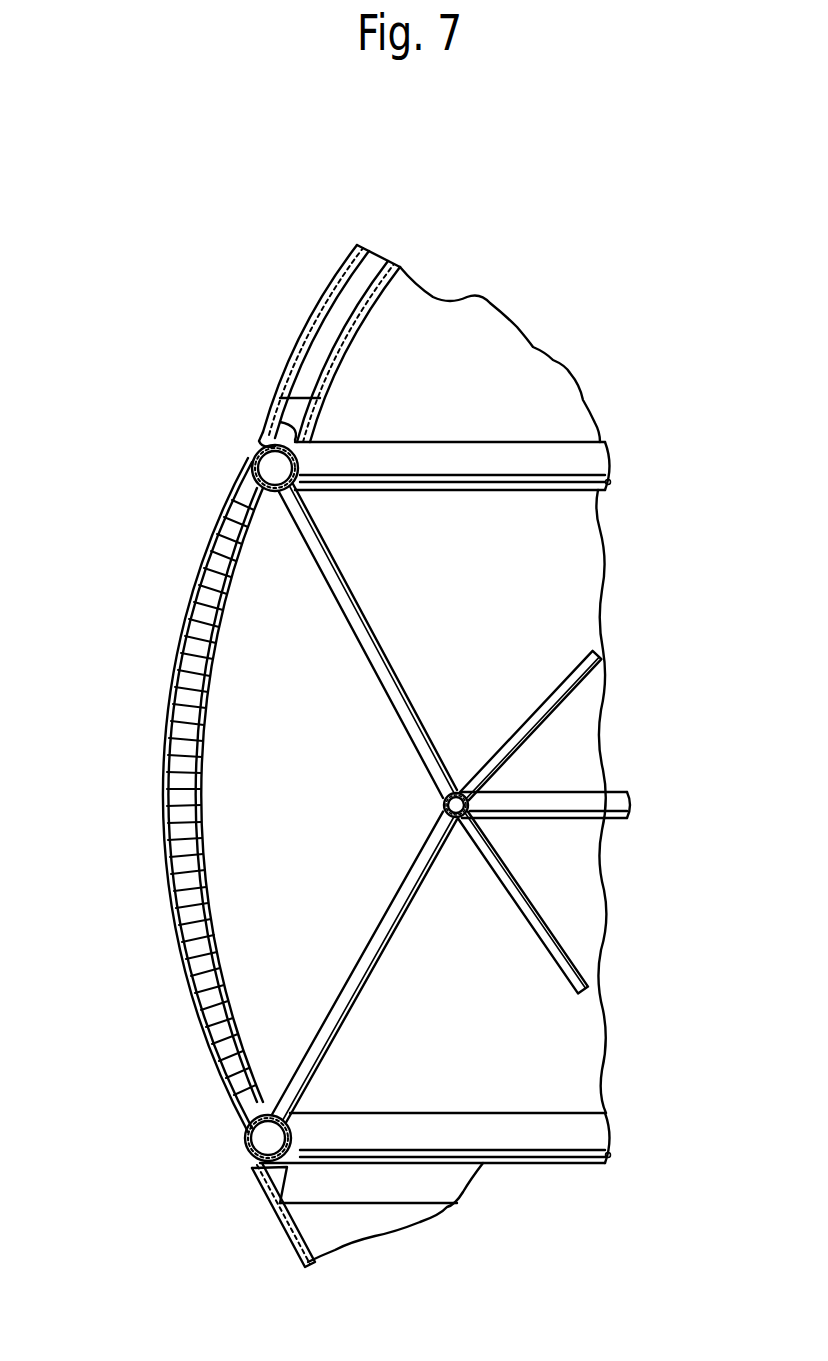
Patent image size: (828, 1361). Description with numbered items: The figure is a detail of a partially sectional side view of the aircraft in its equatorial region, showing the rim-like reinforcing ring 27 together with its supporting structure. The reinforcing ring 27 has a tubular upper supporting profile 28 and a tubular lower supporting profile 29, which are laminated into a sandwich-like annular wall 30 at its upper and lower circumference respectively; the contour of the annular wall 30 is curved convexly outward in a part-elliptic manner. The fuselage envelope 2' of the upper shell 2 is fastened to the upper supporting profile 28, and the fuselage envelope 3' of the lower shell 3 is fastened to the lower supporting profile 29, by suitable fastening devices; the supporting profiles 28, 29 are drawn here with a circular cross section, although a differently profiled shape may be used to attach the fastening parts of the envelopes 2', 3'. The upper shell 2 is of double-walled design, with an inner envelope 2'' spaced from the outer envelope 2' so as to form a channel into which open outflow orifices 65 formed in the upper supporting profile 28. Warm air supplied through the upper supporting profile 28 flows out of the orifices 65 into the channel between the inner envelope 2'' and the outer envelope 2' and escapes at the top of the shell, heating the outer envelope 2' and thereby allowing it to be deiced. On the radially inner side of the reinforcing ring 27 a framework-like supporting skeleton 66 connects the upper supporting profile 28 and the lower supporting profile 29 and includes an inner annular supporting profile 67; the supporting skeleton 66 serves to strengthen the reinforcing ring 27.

The upper shell 2 is at (415, 630).
The fuselage envelope of the upper shell 2' is at (336, 293).
The inner envelope 2'' is at (503, 674).
The outflow orifices 65 is at (297, 433).
The upper supporting profile 28 is at (515, 472).
The reinforcing ring 27 is at (155, 850).
The annular wall 30 is at (173, 700).
The supporting skeleton 66 is at (405, 760).
The inner annular supporting profile 67 is at (585, 798).
The lower supporting profile 29 is at (567, 1153).
The lower shell 3 is at (338, 1236).
The fuselage envelope of the lower shell 3' is at (395, 1235).